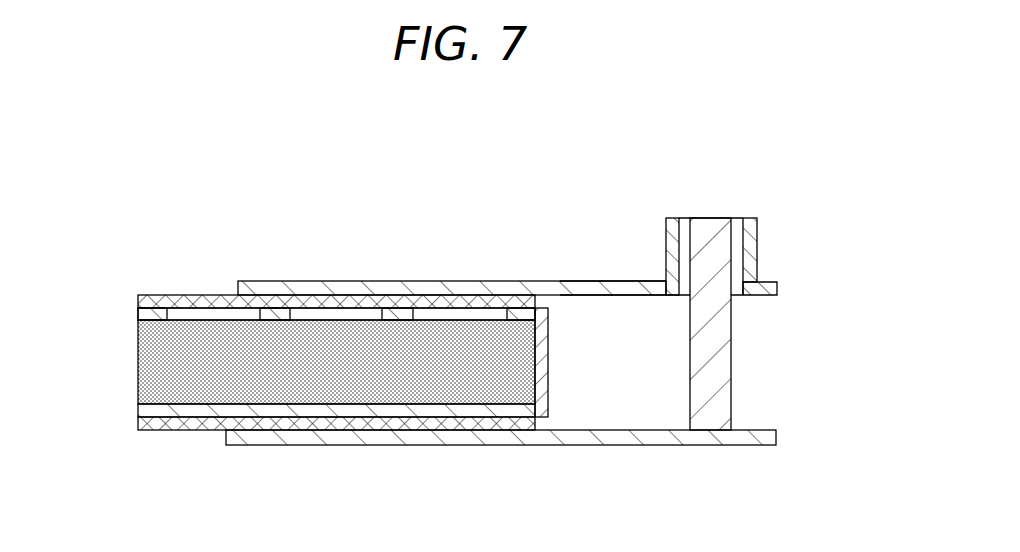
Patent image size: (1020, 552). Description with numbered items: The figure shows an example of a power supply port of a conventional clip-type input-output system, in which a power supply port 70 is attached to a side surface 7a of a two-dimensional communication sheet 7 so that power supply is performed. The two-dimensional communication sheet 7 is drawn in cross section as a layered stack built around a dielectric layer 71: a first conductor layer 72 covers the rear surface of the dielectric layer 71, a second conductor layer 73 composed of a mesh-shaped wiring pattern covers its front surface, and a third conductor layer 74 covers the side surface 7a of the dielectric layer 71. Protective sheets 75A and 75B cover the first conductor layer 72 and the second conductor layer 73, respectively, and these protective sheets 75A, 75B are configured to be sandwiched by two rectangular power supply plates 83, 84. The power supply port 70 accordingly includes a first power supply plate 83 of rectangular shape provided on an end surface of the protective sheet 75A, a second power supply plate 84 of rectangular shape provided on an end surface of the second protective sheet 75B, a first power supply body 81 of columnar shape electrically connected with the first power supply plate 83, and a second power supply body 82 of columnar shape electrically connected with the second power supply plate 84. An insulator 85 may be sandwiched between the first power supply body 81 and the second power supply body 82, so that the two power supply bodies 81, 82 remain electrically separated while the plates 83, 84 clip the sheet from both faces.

The two-dimensional communication sheet 7 is at (69, 233).
The side surface 7a is at (548, 357).
The power supply port 70 is at (843, 213).
The dielectric layer 71 is at (147, 358).
The first conductor layer 72 is at (138, 404).
The second conductor layer 73 is at (138, 309).
The third conductor layer 74 is at (543, 300).
The protective sheet 75A is at (138, 302).
The protective sheet 75B is at (138, 420).
The first power supply body 81 is at (713, 232).
The second power supply body 82 is at (750, 282).
The first power supply plate 83 is at (630, 440).
The second power supply plate 84 is at (635, 292).
The insulator 85 is at (750, 225).